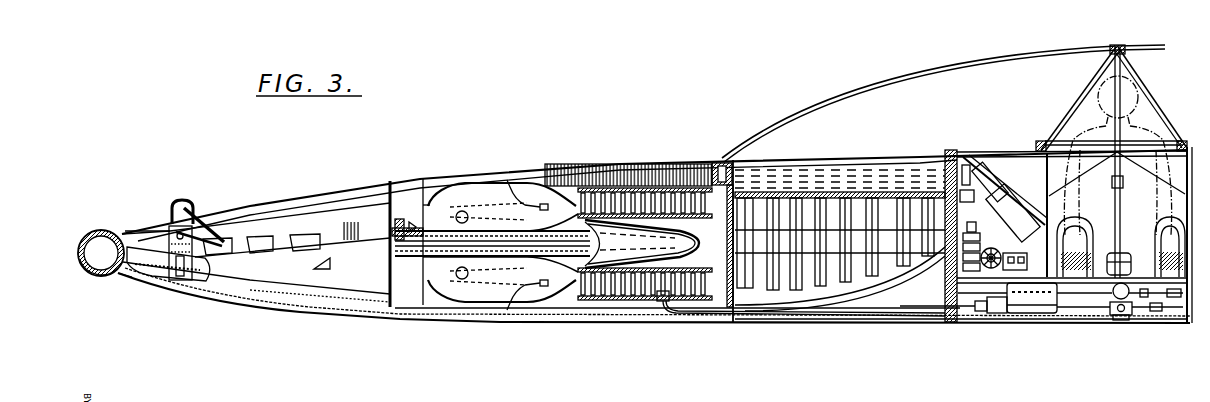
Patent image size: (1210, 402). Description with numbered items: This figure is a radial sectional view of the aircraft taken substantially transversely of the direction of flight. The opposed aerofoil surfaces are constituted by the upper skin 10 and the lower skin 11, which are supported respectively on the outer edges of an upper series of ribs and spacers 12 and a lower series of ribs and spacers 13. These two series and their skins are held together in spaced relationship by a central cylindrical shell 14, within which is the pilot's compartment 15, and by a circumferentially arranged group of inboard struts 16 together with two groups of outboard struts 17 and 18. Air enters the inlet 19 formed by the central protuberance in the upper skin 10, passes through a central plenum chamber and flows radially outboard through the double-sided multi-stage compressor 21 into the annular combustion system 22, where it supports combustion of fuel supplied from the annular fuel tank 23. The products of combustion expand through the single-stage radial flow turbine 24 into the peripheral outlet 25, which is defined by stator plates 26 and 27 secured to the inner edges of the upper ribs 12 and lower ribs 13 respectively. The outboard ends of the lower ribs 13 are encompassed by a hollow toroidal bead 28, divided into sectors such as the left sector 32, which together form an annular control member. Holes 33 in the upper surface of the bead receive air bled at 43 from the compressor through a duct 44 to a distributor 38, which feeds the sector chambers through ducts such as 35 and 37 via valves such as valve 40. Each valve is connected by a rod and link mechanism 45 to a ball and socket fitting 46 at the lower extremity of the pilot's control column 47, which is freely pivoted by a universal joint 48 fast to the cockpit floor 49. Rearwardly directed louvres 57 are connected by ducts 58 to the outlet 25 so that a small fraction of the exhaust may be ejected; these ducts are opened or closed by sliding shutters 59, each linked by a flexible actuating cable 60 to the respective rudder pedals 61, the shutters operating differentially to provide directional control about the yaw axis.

The upper skin 10 is at (322, 190).
The lower skin 11 is at (327, 313).
The upper series of ribs and spacers 12 is at (373, 200).
The lower series of ribs and spacers 13 is at (369, 293).
The central cylindrical shell 14 is at (920, 178).
The pilot's compartment 15 is at (1083, 108).
The inboard struts 16 is at (773, 277).
The outboard struts 17 is at (373, 266).
The outboard struts 18 is at (264, 247).
The inlet 19 is at (943, 103).
The double-sided multi-stage compressor 21 is at (638, 190).
The combustion system 22 is at (464, 197).
The annular fuel tank 23 is at (587, 174).
The single-stage radial flow turbine 24 is at (404, 226).
The peripheral outlet 25 is at (342, 215).
The stator plate 26 is at (274, 240).
The stator plate 27 is at (318, 266).
The hollow toroidal element or bead 28 is at (88, 276).
The left sector 32 is at (92, 230).
The holes 33 is at (106, 232).
The duct 35 is at (995, 311).
The duct 37 is at (520, 303).
The distributor 38 is at (1130, 318).
The valve 40 is at (1030, 310).
The compressor bleed point 43 is at (663, 296).
The duct 44 is at (902, 322).
The rod and link mechanism 45 is at (1155, 296).
The ball and socket fitting 46 is at (1117, 312).
The pilot's control column 47 is at (1115, 238).
The universal joint 48 is at (1112, 296).
The cockpit floor 49 is at (982, 281).
The louvres 57 is at (189, 203).
The ducts 58 is at (220, 226).
The sliding shutters 59 is at (177, 227).
The flexible actuating cable 60 is at (204, 278).
The rudder pedals 61 is at (1062, 220).